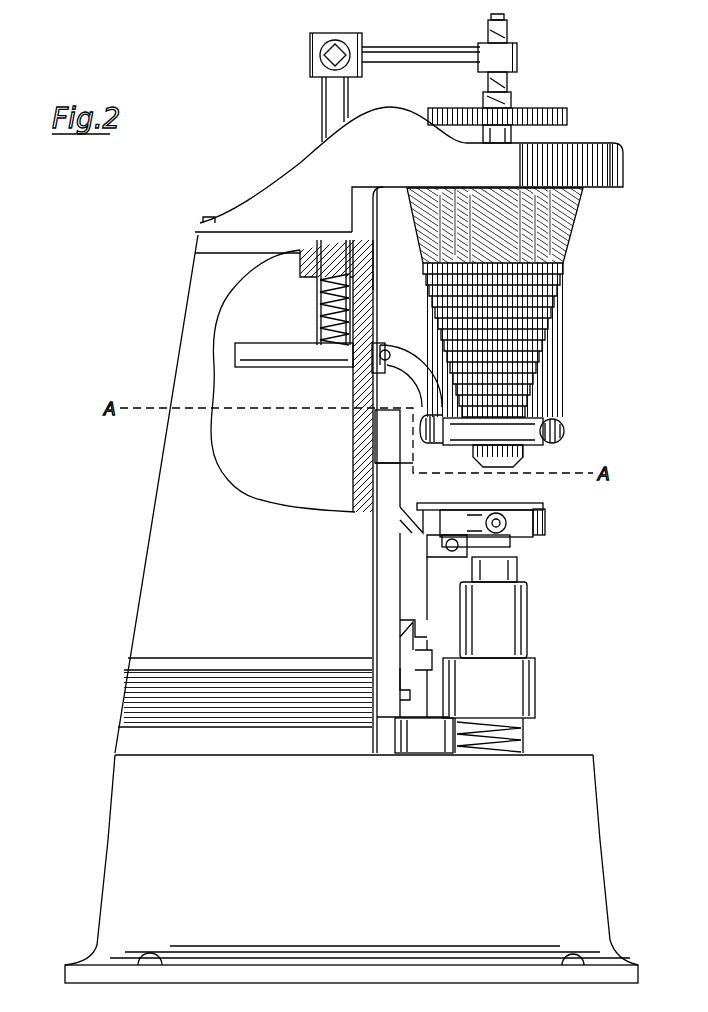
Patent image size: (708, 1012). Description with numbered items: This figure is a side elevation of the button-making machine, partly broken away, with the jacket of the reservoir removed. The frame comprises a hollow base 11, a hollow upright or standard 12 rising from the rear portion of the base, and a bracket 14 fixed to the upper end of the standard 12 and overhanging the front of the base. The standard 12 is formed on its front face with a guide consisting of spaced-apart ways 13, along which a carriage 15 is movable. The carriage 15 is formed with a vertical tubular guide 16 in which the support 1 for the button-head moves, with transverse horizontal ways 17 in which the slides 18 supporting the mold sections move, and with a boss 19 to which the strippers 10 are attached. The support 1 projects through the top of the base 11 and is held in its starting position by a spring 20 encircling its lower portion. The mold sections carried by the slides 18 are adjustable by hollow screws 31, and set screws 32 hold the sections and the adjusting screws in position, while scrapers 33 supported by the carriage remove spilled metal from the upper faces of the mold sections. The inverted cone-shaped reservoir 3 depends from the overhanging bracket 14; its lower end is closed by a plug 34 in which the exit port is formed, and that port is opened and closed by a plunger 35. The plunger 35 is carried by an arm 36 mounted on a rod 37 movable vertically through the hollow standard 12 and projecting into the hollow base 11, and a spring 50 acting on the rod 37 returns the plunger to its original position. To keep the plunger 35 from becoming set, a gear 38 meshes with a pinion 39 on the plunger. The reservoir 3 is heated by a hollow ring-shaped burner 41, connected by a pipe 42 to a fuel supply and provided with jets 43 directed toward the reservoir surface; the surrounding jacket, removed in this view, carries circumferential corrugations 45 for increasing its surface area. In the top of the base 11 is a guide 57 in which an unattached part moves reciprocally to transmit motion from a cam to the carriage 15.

The support 1 is at (530, 586).
The reservoir 3 is at (578, 242).
The strippers 10 is at (512, 542).
The hollow base 11 is at (351, 869).
The hollow upright or standard 12 is at (152, 566).
The ways 13 is at (388, 420).
The bracket 14 is at (325, 150).
The carriage 15 is at (385, 583).
The vertical tubular guide 16 is at (518, 617).
The transverse horizontal ways 17 is at (410, 620).
The slides 18 is at (400, 507).
The boss 19 is at (450, 550).
The spring 20 is at (526, 742).
The hollow screws 31 is at (498, 513).
The set screws 32 is at (547, 520).
The scrapers 33 is at (450, 502).
The plug 34 is at (503, 460).
The plunger 35 is at (508, 24).
The arm 36 is at (433, 48).
The rod 37 is at (333, 100).
The gear 38 is at (553, 105).
The pinion 39 is at (482, 100).
The burner 41 is at (520, 445).
The pipe 42 is at (292, 352).
The jets 43 is at (537, 426).
The circumferential corrugations 45 is at (552, 312).
The spring 50 is at (320, 290).
The guide 57 is at (420, 745).